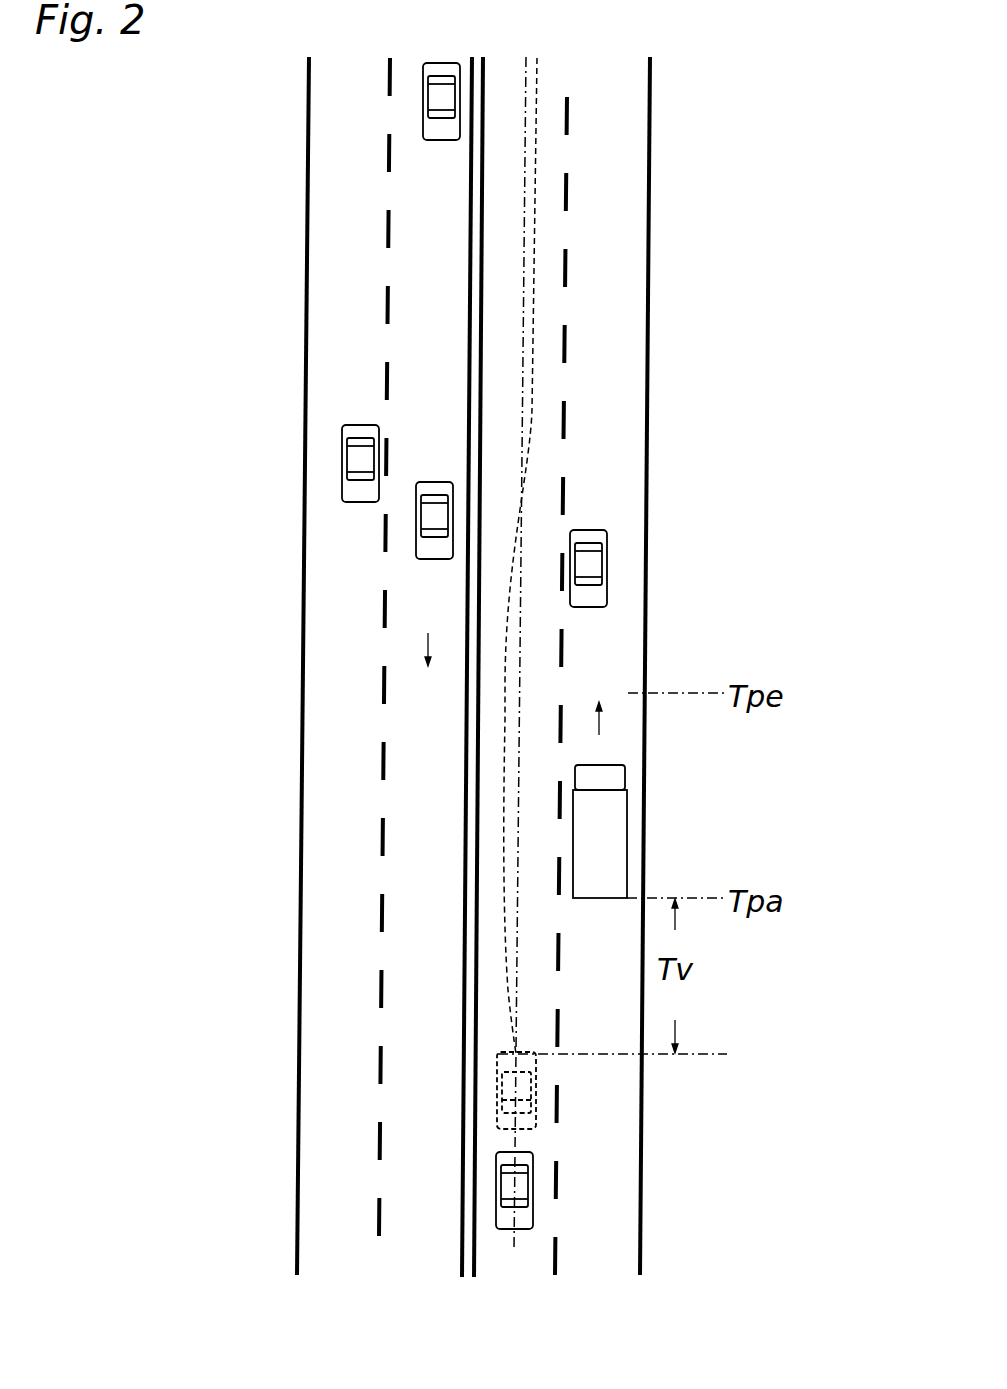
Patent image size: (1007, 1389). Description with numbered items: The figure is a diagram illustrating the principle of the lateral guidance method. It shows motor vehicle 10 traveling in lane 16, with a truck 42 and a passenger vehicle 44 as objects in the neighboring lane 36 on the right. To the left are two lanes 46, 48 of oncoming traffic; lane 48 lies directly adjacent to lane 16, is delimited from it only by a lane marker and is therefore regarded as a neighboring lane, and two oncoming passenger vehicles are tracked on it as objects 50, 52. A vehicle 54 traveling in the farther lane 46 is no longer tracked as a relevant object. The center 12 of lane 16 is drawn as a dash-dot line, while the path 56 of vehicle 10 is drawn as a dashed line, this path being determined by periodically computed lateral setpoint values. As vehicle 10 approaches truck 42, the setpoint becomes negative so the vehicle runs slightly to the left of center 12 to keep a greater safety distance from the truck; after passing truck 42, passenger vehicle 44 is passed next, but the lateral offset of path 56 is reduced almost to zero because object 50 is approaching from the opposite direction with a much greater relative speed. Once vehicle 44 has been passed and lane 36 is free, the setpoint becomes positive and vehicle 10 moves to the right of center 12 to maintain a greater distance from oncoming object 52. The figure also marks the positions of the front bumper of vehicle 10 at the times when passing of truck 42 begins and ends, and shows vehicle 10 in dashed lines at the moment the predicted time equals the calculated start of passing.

The motor vehicle 10 is at (497, 1192).
The center of lane 12 is at (526, 201).
The lane 16 is at (526, 1252).
The neighboring lane 36 is at (601, 1250).
The truck 42 is at (616, 826).
The passenger vehicle 44 is at (597, 573).
The lane of oncoming traffic 46 is at (352, 1248).
The lane of oncoming traffic 48 is at (426, 1248).
The object 50 is at (425, 548).
The object 52 is at (423, 111).
The vehicle 54 is at (350, 458).
The path 56 is at (537, 310).